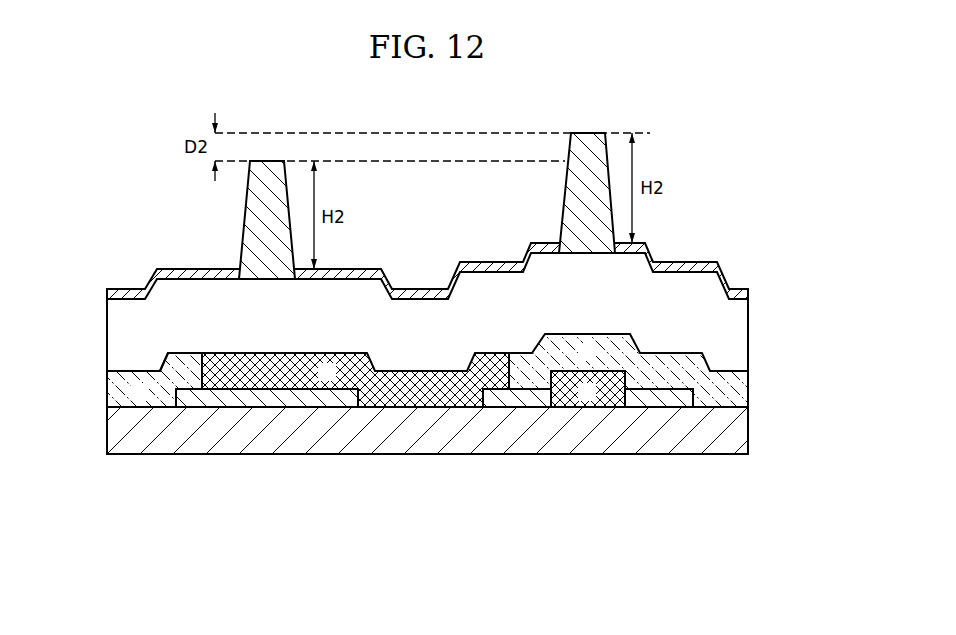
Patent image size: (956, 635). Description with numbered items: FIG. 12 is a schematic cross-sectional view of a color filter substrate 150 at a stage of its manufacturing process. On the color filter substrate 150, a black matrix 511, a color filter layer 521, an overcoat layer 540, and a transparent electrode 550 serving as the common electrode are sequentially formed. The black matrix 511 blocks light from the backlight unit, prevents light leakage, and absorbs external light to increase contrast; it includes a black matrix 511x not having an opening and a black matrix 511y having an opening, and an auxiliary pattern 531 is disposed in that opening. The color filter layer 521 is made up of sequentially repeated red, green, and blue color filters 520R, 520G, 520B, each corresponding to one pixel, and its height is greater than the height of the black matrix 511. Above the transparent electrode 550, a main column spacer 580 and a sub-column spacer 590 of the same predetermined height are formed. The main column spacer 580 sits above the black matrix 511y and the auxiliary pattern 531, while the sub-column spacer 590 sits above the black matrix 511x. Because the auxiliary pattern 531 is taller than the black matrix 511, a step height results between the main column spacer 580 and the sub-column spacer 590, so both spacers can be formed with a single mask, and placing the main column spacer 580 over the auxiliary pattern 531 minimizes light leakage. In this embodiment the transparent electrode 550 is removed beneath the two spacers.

The color filter substrate 150 is at (128, 427).
The black matrix 511 is at (434, 474).
The black matrix not having an opening 511x is at (311, 400).
The black matrix having an opening 511y is at (514, 400).
The green color filter 520G is at (185, 359).
The blue color filter 520B is at (292, 359).
The red color filter 520R is at (667, 362).
The color filter layer 521 is at (113, 389).
The auxiliary pattern 531 is at (608, 402).
The overcoat layer 540 is at (107, 333).
The transparent electrode 550 is at (107, 292).
The main column spacer 580 is at (566, 203).
The sub-column spacer 590 is at (241, 219).